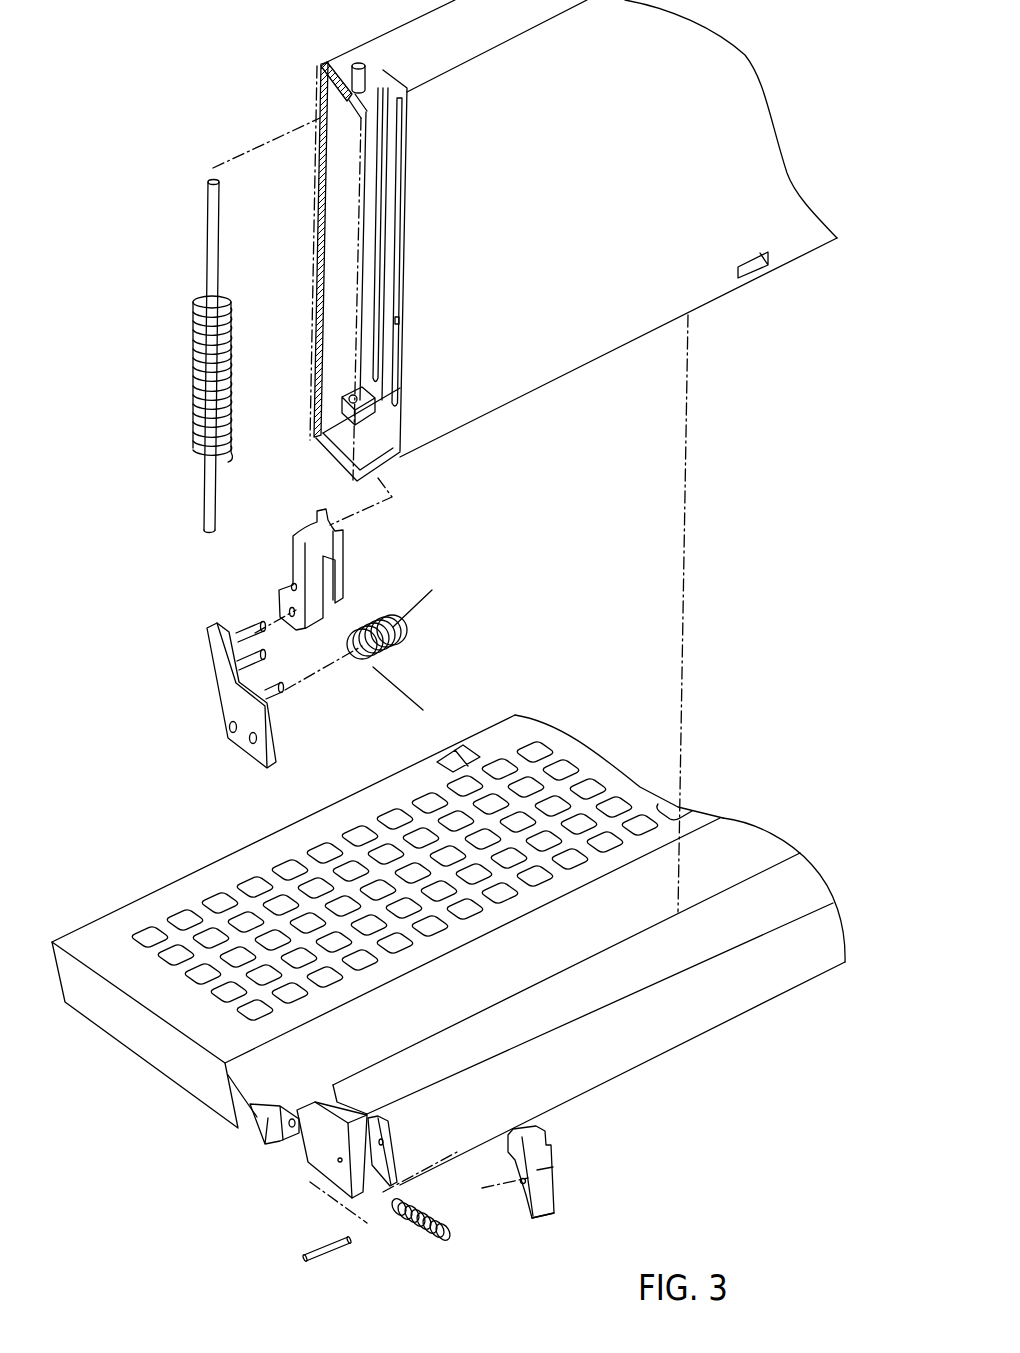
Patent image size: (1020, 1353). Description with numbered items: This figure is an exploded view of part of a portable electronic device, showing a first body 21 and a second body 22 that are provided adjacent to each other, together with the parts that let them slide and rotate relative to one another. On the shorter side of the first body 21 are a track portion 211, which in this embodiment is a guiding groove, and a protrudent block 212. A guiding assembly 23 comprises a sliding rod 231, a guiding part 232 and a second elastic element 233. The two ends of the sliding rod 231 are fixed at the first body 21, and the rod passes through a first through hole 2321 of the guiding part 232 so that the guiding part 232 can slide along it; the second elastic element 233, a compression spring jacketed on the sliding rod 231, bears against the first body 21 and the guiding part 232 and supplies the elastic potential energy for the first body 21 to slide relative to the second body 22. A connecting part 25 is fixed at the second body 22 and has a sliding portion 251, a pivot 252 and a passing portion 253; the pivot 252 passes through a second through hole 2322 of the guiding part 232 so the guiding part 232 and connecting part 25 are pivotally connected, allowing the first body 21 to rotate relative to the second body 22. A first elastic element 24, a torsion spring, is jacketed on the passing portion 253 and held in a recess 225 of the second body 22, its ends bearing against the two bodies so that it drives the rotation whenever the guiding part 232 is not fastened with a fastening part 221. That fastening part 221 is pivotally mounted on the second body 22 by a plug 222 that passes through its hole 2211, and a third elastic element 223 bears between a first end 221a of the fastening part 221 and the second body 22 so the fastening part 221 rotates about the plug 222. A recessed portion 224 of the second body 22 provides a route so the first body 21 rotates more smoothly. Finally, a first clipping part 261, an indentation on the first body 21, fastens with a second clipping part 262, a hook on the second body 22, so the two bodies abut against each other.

The first body 21 is at (413, 47).
The track portion 211 is at (398, 127).
The protrudent block 212 is at (397, 322).
The first clipping part 261 is at (748, 268).
The guiding assembly 23 is at (112, 15).
The sliding rod 231 is at (212, 250).
The guiding part 232 is at (303, 532).
The second elastic element 233 is at (197, 403).
The first through hole 2321 is at (292, 586).
The second through hole 2322 is at (288, 613).
The first elastic element 24 is at (408, 607).
The connecting part 25 is at (272, 748).
The sliding portion 251 is at (252, 660).
The pivot 252 is at (247, 633).
The passing portion 253 is at (275, 703).
The second body 22 is at (675, 1018).
The second clipping part 262 is at (528, 724).
The recessed portion 224 is at (253, 1090).
The recess 225 is at (332, 1115).
The plug 222 is at (333, 1247).
The third elastic element 223 is at (450, 1232).
The fastening part 221 is at (558, 1173).
The hole 2211 is at (523, 1182).
The first end 221a is at (547, 1208).